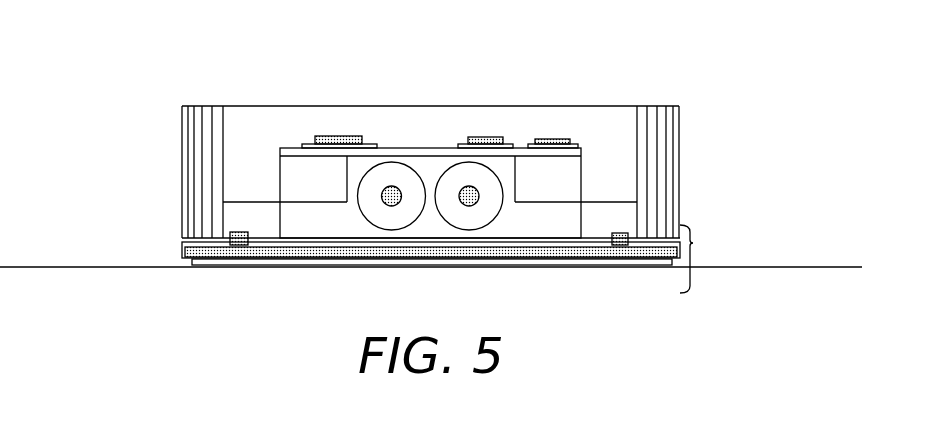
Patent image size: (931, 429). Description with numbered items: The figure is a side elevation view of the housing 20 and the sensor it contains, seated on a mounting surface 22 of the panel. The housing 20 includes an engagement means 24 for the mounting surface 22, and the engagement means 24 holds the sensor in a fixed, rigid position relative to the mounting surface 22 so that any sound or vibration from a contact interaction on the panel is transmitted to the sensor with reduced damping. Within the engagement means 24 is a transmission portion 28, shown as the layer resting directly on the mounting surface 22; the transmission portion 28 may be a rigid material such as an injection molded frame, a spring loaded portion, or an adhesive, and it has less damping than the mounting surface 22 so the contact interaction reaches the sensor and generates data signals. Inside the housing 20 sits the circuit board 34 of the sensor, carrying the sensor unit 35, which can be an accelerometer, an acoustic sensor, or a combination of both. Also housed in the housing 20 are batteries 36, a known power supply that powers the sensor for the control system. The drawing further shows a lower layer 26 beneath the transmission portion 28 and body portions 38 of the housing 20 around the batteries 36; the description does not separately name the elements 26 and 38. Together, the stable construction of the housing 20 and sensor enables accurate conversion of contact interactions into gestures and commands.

The housing 20 is at (198, 104).
The mounting surface 22 is at (757, 268).
The engagement means 24 is at (706, 259).
The lower layer 26 is at (545, 262).
The transmission portion 28 is at (178, 252).
The circuit board 34 is at (273, 148).
The sensor unit 35 is at (565, 138).
The batteries 36 is at (383, 212).
The body block 38 is at (291, 172).